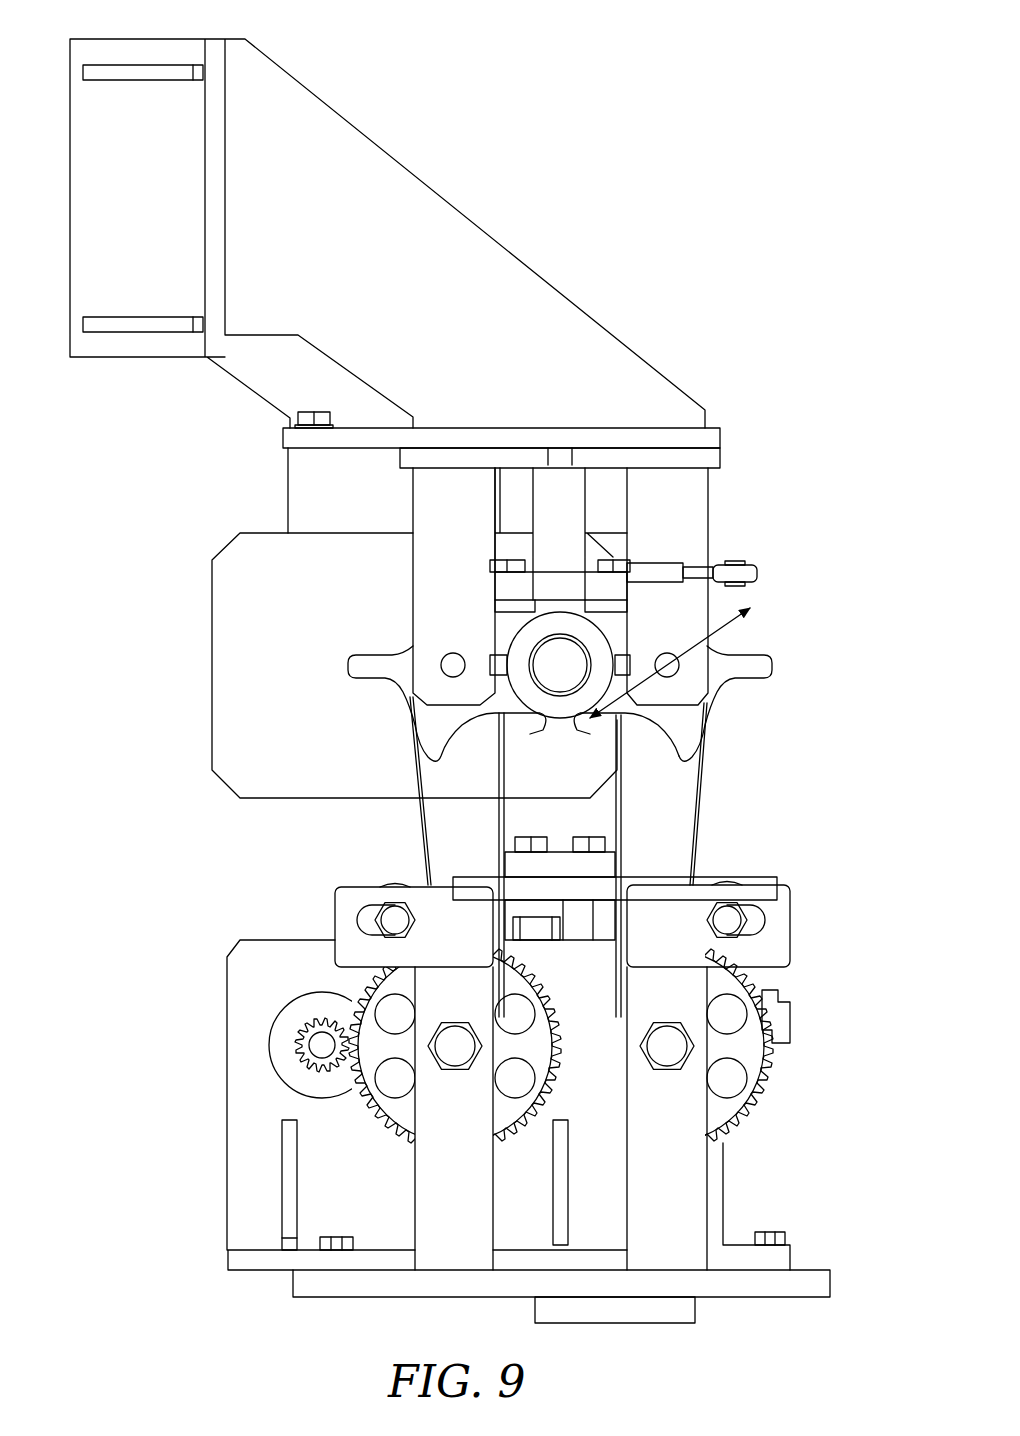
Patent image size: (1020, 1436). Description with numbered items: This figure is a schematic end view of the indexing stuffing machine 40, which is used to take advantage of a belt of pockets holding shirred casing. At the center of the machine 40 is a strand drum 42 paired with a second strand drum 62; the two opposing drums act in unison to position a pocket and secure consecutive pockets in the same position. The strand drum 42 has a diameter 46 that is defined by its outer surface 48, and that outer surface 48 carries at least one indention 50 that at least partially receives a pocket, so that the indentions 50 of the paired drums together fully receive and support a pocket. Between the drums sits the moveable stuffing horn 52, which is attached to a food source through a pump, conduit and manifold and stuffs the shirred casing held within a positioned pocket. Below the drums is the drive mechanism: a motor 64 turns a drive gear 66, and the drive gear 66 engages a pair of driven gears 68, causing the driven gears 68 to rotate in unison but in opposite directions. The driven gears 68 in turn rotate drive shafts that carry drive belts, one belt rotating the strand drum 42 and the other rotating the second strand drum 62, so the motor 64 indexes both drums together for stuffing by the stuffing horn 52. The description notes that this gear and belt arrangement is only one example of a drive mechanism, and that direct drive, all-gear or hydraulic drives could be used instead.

The stuffing machine 40 is at (611, 168).
The strand drum 42 is at (657, 732).
The diameter 46 is at (750, 625).
The outer surface 48 is at (773, 668).
The indention 50 is at (736, 680).
The stuffing horn 52 is at (557, 682).
The second strand drum 62 is at (392, 660).
The motor 64 is at (250, 1062).
The drive gear 66 is at (318, 1020).
The driven gears 68 is at (375, 1118).